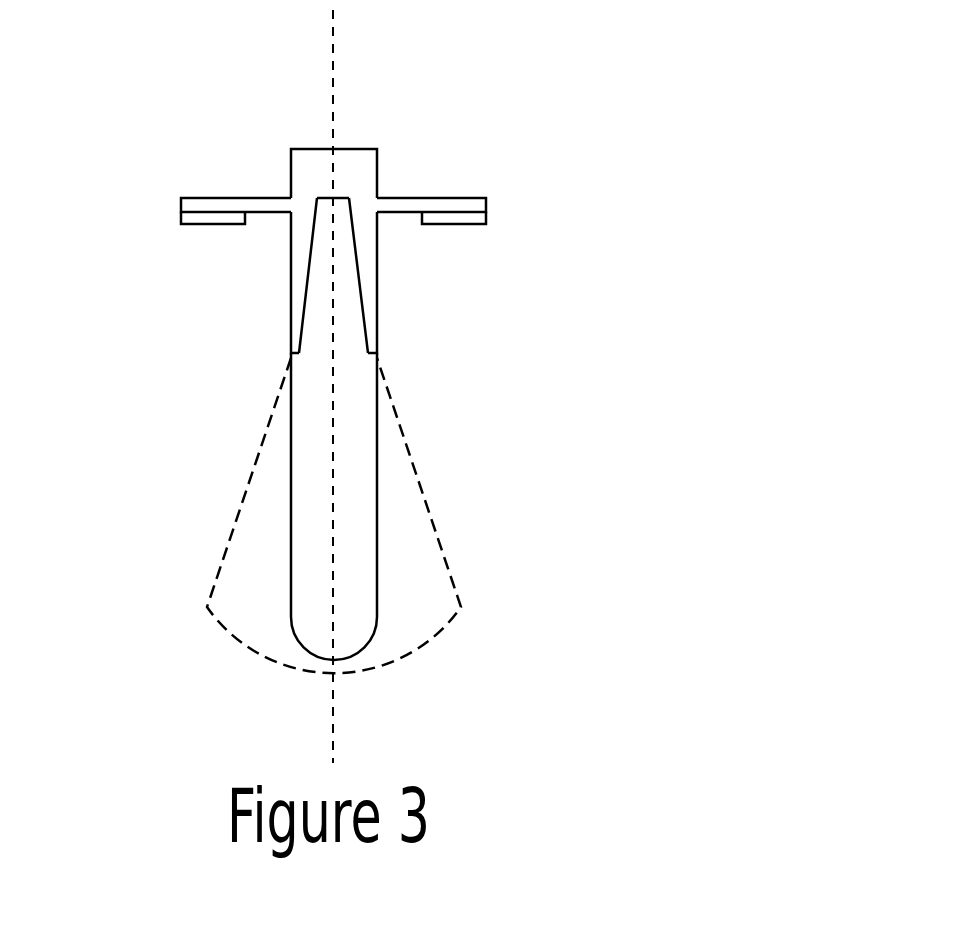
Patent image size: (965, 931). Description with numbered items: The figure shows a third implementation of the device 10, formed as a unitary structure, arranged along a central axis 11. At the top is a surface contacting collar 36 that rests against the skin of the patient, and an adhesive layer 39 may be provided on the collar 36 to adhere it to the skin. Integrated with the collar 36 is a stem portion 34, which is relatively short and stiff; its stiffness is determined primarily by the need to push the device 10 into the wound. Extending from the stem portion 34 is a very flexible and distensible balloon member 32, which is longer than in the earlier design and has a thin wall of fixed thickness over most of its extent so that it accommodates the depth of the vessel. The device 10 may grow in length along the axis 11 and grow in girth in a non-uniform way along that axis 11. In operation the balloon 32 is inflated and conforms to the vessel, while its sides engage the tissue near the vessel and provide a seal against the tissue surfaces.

The device 10 is at (535, 378).
The axis 11 is at (332, 112).
The balloon member 32 is at (376, 570).
The stem portion 34 is at (300, 243).
The surface contacting collar 36 is at (399, 201).
The adhesive layer 39 is at (457, 216).